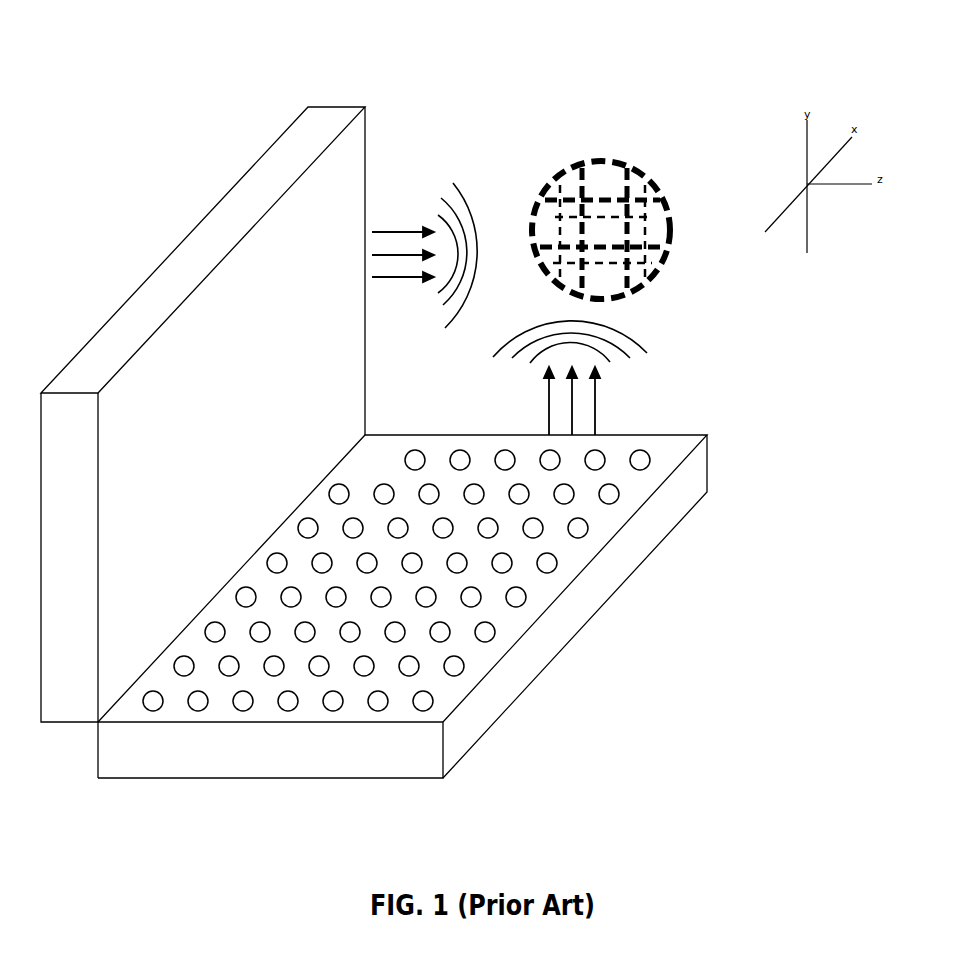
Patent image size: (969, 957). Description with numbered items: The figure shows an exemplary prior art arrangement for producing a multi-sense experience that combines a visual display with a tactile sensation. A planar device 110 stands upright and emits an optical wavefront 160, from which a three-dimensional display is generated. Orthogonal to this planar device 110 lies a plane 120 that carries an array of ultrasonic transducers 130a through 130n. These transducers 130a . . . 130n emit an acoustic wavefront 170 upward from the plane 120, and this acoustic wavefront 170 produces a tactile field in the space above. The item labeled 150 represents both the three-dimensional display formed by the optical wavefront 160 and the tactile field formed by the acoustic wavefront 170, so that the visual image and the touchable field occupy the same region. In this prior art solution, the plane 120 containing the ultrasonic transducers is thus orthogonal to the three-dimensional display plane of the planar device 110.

The planar device 110 is at (338, 102).
The plane 120 is at (615, 562).
The ultrasonic transducer 130a is at (158, 703).
The ultrasonic transducer 130n is at (650, 452).
The 3-D display and tactile field 150 is at (570, 160).
The optical wavefront 160 is at (443, 177).
The acoustic wavefront 170 is at (647, 348).